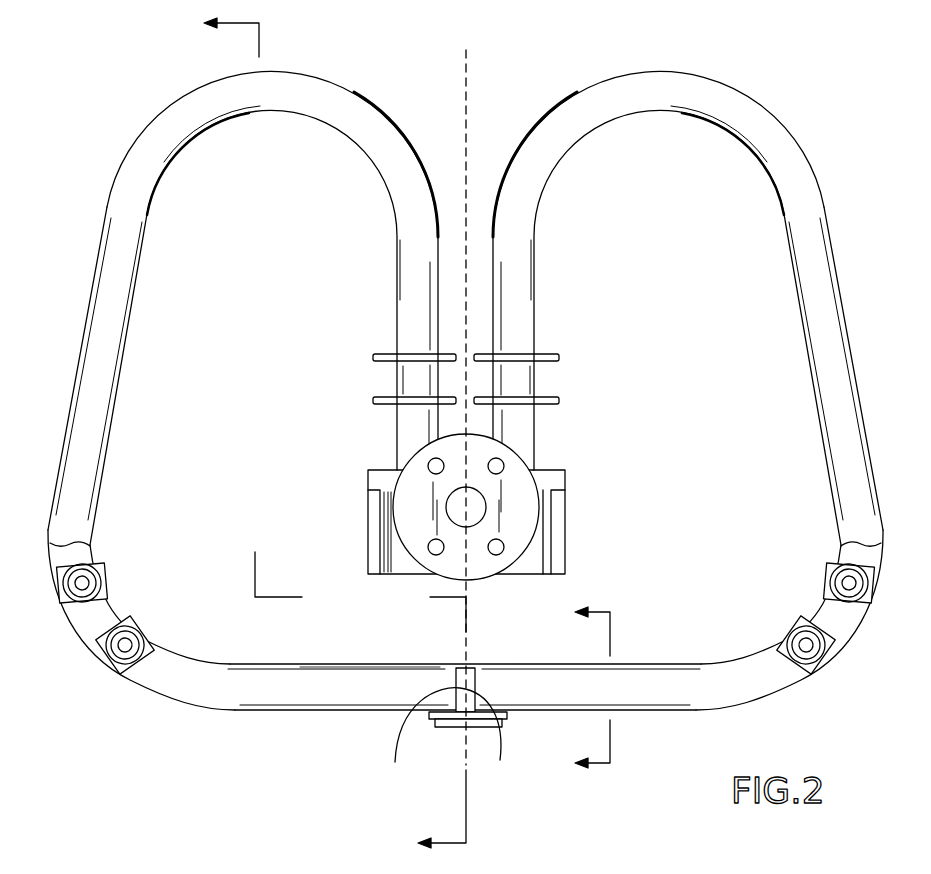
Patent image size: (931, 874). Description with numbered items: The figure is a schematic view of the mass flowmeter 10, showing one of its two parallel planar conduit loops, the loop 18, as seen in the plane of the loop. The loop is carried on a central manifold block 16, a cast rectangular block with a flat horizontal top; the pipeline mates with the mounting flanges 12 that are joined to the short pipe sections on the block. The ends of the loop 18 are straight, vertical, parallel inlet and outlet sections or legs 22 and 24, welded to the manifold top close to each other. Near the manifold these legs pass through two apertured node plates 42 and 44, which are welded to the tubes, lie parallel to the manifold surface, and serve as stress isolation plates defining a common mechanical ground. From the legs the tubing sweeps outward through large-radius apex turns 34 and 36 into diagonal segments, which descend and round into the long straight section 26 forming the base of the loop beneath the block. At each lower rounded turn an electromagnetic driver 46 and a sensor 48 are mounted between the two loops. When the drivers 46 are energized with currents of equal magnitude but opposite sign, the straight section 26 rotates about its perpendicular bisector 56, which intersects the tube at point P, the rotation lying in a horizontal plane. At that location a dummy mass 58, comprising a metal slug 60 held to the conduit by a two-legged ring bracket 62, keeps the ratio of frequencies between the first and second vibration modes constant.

The mass flowmeter 10 is at (465, 433).
The mounting flange 12 is at (485, 570).
The central manifold block 16 is at (556, 528).
The loop 18 is at (465, 403).
The inlet section 22 is at (403, 379).
The outlet section 24 is at (530, 378).
The long straight section 26 is at (657, 711).
The apex turn 34 is at (196, 105).
The apex turn 36 is at (640, 86).
The node plate 42 is at (558, 402).
The node plate 44 is at (558, 357).
The electromagnetic driver 46 is at (103, 580).
The sensor 48 is at (100, 653).
The perpendicular bisector 56 is at (468, 153).
The dummy mass 58 is at (380, 732).
The metal slug 60 is at (490, 730).
The bracket 62 is at (428, 716).
The point p P is at (448, 733).